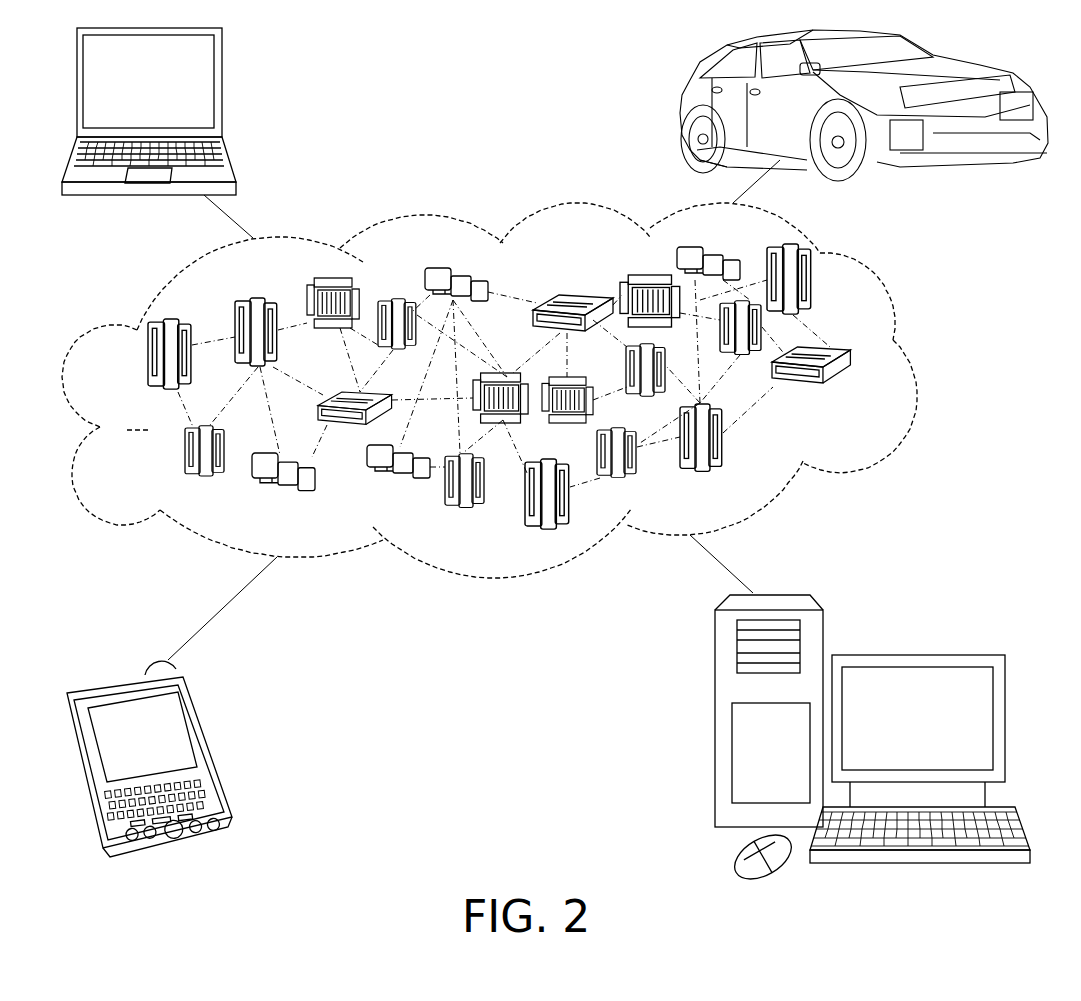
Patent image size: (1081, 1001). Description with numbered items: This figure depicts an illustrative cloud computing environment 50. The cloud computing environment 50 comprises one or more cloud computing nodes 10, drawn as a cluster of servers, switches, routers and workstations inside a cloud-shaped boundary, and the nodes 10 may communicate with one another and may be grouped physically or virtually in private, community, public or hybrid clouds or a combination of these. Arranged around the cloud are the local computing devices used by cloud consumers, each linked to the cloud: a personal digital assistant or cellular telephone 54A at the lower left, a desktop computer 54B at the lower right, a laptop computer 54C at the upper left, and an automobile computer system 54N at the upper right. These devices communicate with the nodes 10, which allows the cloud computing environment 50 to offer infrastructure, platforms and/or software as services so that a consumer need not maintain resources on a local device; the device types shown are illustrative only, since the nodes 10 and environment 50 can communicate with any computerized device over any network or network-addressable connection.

The cloud computing node 10 is at (853, 393).
The cloud computing environment 50 is at (913, 366).
The personal digital assistant or cellular telephone 54A is at (208, 747).
The desktop computer 54B is at (917, 654).
The laptop computer 54C is at (221, 90).
The automobile computer system 54N is at (681, 107).